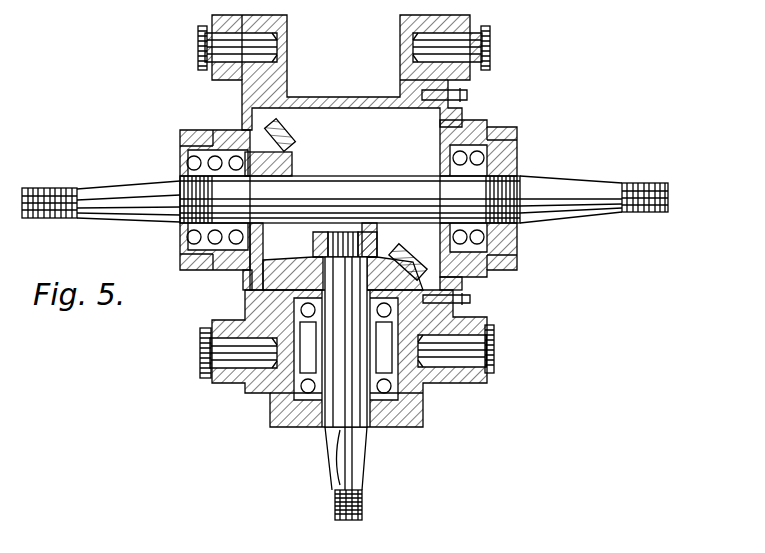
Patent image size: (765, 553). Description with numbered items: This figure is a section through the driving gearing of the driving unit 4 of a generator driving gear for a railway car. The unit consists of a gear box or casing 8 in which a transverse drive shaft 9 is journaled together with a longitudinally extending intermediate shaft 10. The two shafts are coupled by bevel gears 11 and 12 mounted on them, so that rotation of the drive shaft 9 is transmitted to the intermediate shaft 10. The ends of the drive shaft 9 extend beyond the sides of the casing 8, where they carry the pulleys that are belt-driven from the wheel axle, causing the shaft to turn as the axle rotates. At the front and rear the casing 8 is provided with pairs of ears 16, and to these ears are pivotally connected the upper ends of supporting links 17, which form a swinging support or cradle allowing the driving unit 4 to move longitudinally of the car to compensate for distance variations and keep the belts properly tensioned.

The driving unit 4 is at (508, 260).
The gear box or casing 8 is at (242, 108).
The transverse drive shaft 9 is at (368, 177).
The intermediate shaft 10 is at (355, 358).
The bevel gear 11 is at (292, 157).
The bevel gear 12 is at (422, 258).
The ears 16 is at (257, 377).
The supporting links 17 is at (220, 82).